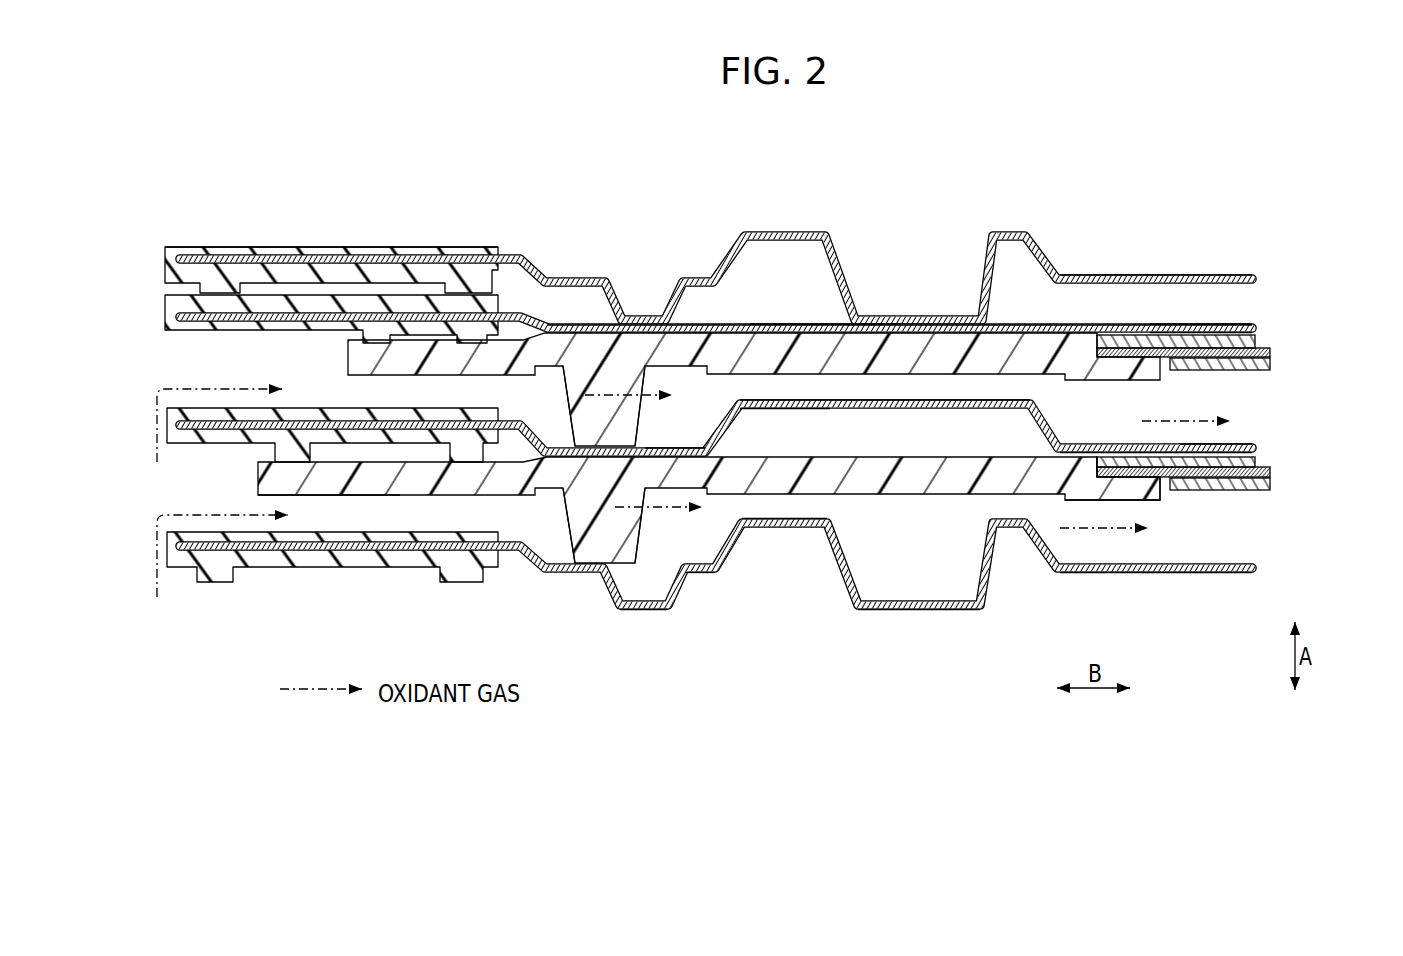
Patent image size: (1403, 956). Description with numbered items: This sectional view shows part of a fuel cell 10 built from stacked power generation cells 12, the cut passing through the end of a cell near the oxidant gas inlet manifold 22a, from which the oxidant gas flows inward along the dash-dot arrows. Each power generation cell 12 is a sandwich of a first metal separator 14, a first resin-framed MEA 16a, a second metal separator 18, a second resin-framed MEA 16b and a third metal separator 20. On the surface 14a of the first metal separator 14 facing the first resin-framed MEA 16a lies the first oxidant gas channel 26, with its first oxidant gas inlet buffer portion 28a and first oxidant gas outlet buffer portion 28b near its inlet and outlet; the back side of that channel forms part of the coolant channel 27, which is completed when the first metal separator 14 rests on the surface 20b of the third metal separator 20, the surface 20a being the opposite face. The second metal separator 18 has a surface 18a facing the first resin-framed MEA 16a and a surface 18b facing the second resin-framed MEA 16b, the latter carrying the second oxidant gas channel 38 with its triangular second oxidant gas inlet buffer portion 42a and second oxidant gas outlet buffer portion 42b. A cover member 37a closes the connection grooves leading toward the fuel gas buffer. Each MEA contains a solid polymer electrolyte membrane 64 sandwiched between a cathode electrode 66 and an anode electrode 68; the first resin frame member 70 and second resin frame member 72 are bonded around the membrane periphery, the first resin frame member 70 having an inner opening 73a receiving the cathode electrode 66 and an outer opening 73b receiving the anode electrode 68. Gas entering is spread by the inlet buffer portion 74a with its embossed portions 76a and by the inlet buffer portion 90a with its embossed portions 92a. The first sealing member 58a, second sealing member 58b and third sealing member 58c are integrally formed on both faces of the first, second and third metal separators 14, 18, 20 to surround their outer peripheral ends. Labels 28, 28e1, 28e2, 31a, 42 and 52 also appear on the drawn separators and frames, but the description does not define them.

The fuel cell 10 is at (409, 190).
The power generation cell 12 is at (1358, 555).
The first metal separator 14 is at (1258, 280).
The surface of first metal separator 14a is at (1230, 576).
The first resin-framed MEA 16a is at (1224, 472).
The second resin-framed MEA 16b is at (1262, 380).
The second metal separator 18 is at (1238, 440).
The surface of second metal separator 18a is at (1125, 440).
The surface of second metal separator 18b is at (1197, 488).
The third metal separator 20 is at (1238, 326).
The surface of third metal separator 20a is at (1203, 338).
The surface of third metal separator 20b is at (1223, 324).
The oxidant gas inlet manifold 22a is at (146, 558).
The first oxidant gas channel 26 is at (1100, 552).
The coolant channel 27 is at (1112, 305).
The bead seal of first separator 28 is at (788, 600).
The first oxidant gas inlet buffer portion 28a is at (784, 575).
The first oxidant gas outlet buffer portion 28b is at (694, 578).
The first bottom of bead seal 28e1 is at (927, 608).
The second bottom of bead seal 28e2 is at (632, 612).
The resin seal member 31a is at (345, 513).
The cover member 37a is at (883, 410).
The second oxidant gas channel 38 is at (1180, 390).
The bead seal of second separator 42 is at (737, 288).
The second oxidant gas inlet buffer portion 42a is at (768, 403).
The second oxidant gas outlet buffer portion 42b is at (683, 440).
The bead seal of third separator 52 is at (819, 324).
The first sealing member 58a is at (284, 562).
The second sealing member 58b is at (205, 440).
The third sealing member 58c is at (173, 308).
The solid polymer electrolyte membrane 64 is at (1270, 472).
The cathode electrode 66 is at (1264, 485).
The anode electrode 68 is at (1262, 452).
The first resin frame member 70 is at (1005, 492).
The second resin frame member 72 is at (643, 345).
The inner opening 73a is at (1161, 500).
The outer opening 73b is at (1097, 460).
The inlet buffer portion 74a is at (642, 541).
The embossed portions 76a is at (575, 542).
The inlet buffer portion 90a is at (647, 413).
The embossed portions 92a is at (573, 395).